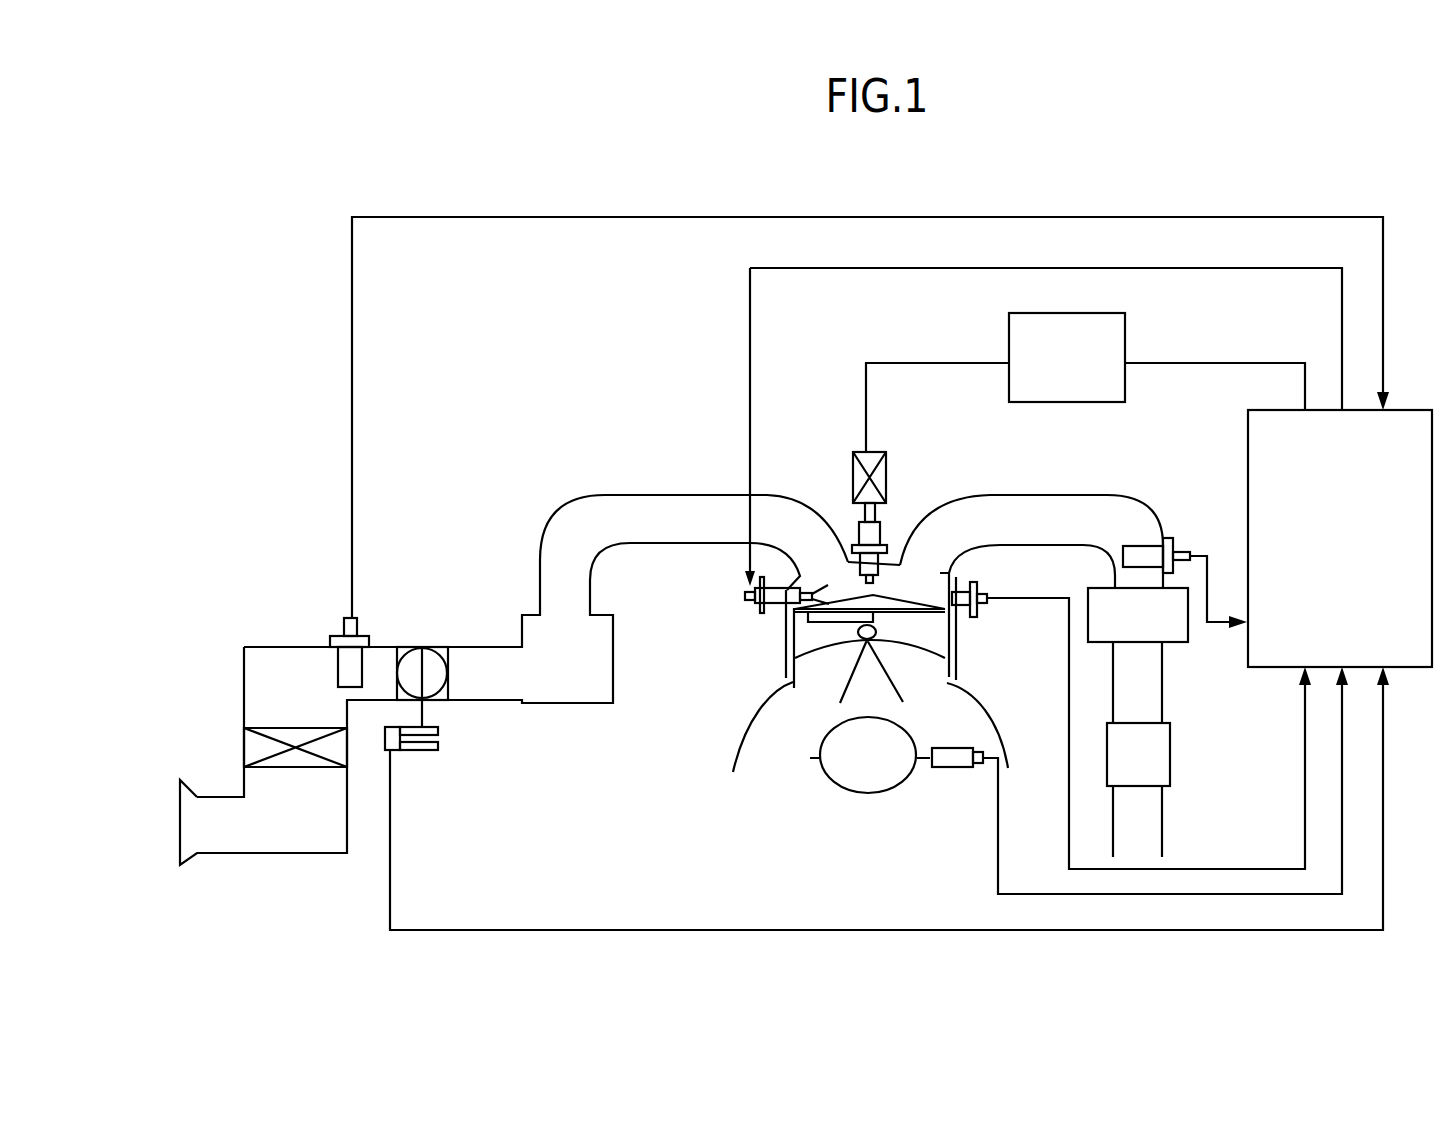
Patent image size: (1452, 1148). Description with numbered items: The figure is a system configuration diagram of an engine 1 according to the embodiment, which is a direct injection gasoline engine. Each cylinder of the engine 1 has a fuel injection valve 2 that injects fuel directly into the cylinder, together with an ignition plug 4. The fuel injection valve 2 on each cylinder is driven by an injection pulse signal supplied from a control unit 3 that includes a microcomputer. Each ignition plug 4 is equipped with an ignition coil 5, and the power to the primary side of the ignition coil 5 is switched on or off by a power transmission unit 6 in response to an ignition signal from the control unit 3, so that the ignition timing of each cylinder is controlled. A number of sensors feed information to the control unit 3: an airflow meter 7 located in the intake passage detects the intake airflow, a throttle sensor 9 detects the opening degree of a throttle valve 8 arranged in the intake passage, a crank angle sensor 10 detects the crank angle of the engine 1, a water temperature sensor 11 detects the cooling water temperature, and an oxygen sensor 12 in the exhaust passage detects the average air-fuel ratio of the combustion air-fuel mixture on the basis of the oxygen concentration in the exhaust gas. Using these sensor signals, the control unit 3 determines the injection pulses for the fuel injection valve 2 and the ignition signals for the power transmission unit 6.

The engine 1 is at (728, 713).
The fuel injection valve 2 is at (783, 612).
The control unit 3 is at (1413, 408).
The ignition plug 4 is at (875, 532).
The ignition coil 5 is at (850, 470).
The power transmission unit 6 is at (1072, 402).
The airflow meter 7 is at (337, 620).
The throttle valve 8 is at (433, 647).
The throttle sensor 9 is at (440, 738).
The crank angle sensor 10 is at (947, 770).
The water temperature sensor 11 is at (980, 618).
The oxygen sensor 12 is at (1180, 540).